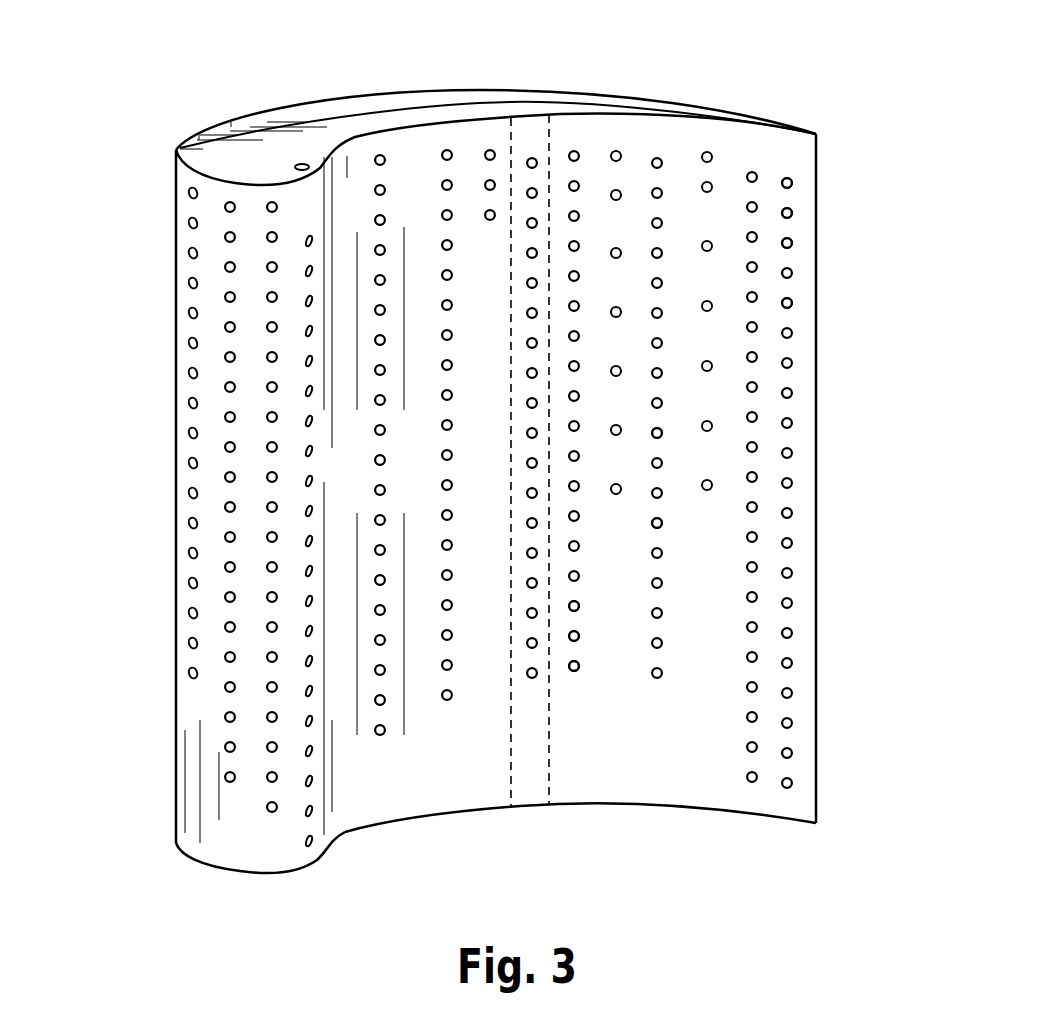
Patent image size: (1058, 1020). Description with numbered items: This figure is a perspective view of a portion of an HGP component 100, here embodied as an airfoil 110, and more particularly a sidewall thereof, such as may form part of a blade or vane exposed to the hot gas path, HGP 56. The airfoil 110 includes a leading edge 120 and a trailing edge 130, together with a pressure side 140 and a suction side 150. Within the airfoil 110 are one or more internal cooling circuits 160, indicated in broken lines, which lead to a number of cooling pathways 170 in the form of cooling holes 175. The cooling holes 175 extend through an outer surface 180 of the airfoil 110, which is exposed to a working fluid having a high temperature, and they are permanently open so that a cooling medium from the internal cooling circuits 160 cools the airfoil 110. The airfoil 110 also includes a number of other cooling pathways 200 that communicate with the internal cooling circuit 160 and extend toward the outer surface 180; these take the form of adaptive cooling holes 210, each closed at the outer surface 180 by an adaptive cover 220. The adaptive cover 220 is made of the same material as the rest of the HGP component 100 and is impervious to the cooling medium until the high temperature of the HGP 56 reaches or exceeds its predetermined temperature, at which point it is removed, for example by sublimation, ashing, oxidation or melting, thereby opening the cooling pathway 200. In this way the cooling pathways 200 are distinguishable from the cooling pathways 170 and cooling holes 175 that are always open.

The hot gas path 56 is at (108, 351).
The HGP component 100 is at (128, 112).
The airfoil 110 is at (244, 98).
The leading edge 120 is at (190, 856).
The trailing edge 130 is at (818, 780).
The pressure side 140 is at (655, 782).
The suction side 150 is at (578, 91).
The internal cooling circuit 160 is at (530, 132).
The cooling pathways 170 is at (793, 183).
The cooling holes 175 is at (812, 294).
The outer surface 180 is at (483, 780).
The cooling pathways 200 is at (662, 433).
The adaptive cooling holes 210 is at (579, 608).
The adaptive cover 220 is at (569, 674).